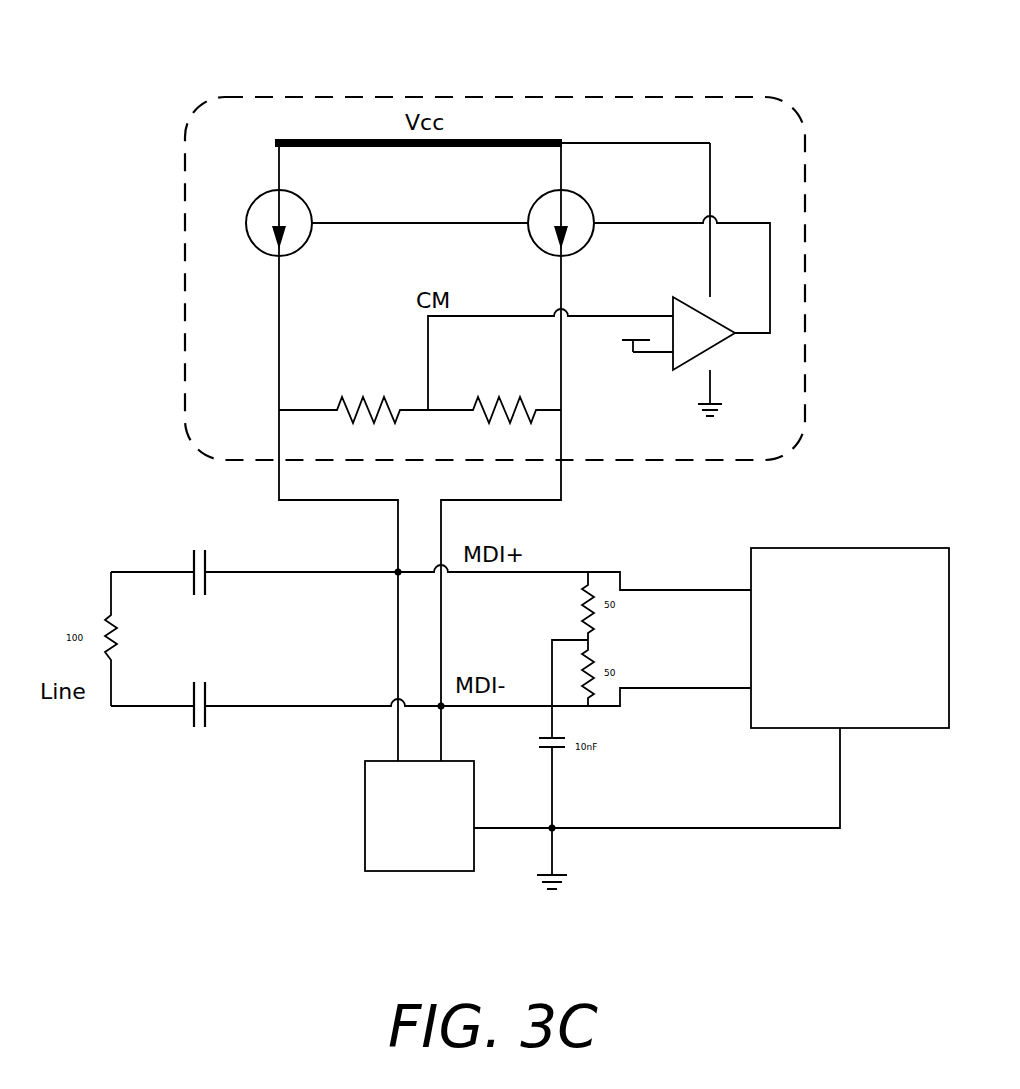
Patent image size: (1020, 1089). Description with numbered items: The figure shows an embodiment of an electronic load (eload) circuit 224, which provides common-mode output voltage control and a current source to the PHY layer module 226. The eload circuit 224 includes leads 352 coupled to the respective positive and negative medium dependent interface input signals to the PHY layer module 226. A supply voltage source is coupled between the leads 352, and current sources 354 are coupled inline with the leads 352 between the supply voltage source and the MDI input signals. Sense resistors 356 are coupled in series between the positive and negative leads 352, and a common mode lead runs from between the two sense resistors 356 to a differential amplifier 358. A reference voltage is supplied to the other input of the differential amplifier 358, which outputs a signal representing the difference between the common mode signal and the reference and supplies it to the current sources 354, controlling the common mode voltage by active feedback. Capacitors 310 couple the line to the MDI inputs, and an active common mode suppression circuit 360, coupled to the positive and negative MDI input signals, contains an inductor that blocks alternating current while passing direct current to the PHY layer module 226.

The eload circuit 224 is at (215, 97).
The current sources 354 is at (246, 224).
The sense resistors 356 is at (355, 398).
The leads 352 is at (276, 440).
The differential amplifier 358 is at (723, 345).
The capacitors 310 is at (212, 560).
The PHY layer module 226 is at (841, 547).
The active common mode suppression circuit 360 is at (365, 818).